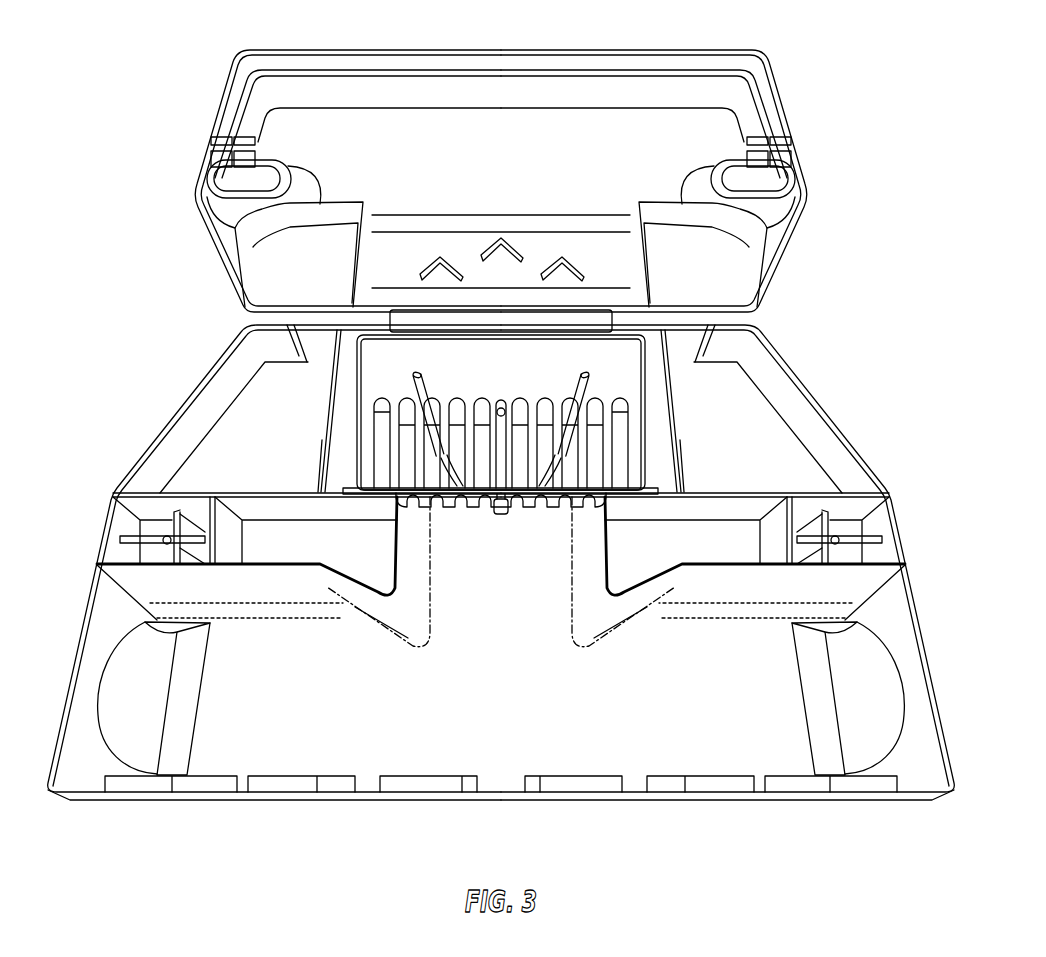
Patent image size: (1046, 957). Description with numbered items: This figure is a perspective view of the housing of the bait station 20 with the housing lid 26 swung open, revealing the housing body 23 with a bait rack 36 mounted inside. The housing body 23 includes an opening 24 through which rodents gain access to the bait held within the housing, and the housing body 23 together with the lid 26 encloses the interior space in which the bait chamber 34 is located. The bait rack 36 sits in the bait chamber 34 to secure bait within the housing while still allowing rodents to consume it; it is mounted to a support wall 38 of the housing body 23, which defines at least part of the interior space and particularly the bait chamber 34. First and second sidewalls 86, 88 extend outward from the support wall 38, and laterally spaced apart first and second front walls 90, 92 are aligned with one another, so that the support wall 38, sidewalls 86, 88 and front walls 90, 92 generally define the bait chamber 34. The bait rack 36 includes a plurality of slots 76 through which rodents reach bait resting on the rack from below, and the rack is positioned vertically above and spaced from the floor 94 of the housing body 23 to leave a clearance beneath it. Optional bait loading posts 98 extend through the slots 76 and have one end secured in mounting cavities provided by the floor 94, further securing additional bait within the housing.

The bait station 20 is at (501, 440).
The housing body 23 is at (840, 428).
The opening 24 is at (126, 702).
The housing lid 26 is at (810, 181).
The bait chamber 34 is at (374, 369).
The bait rack 36 is at (620, 381).
The support wall 38 is at (636, 330).
The slots 76 is at (519, 512).
The first sidewall 86 is at (327, 398).
The second sidewall 88 is at (678, 422).
The first front wall 90 is at (330, 456).
The second front wall 92 is at (672, 478).
The floor 94 is at (372, 740).
The bait loading posts 98 is at (417, 376).